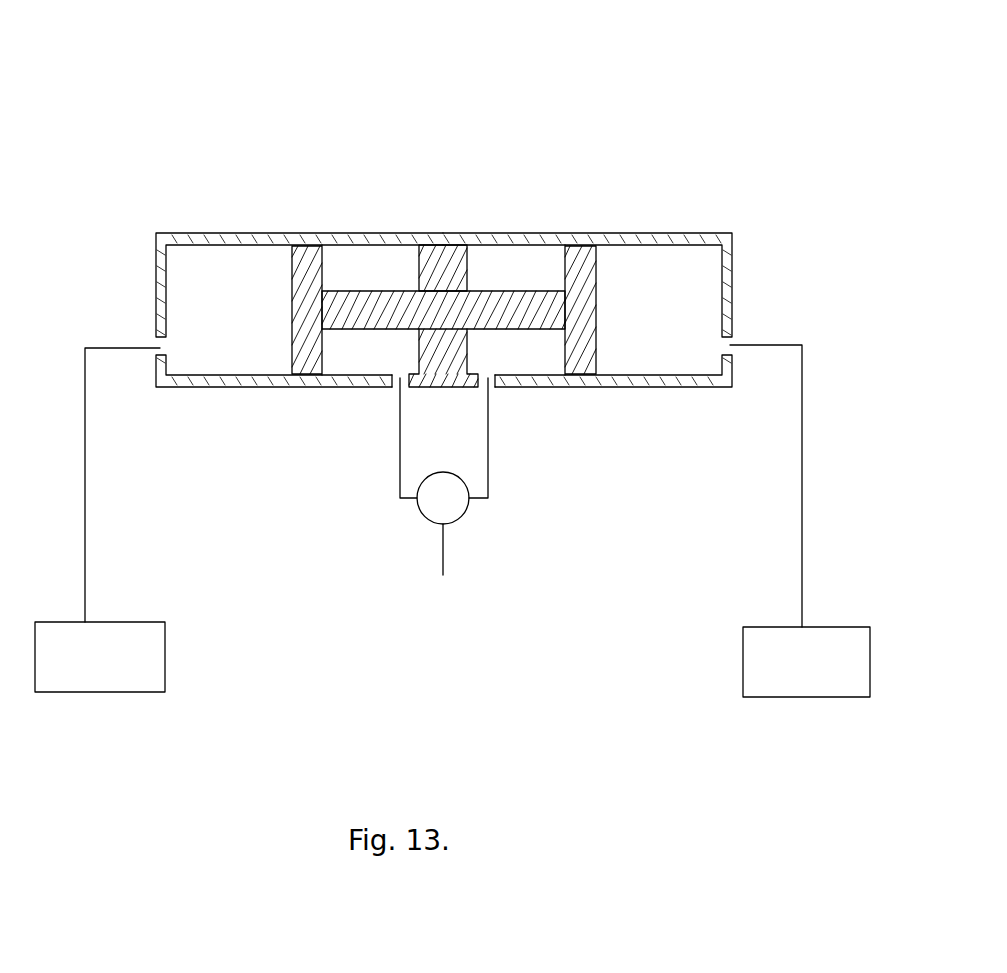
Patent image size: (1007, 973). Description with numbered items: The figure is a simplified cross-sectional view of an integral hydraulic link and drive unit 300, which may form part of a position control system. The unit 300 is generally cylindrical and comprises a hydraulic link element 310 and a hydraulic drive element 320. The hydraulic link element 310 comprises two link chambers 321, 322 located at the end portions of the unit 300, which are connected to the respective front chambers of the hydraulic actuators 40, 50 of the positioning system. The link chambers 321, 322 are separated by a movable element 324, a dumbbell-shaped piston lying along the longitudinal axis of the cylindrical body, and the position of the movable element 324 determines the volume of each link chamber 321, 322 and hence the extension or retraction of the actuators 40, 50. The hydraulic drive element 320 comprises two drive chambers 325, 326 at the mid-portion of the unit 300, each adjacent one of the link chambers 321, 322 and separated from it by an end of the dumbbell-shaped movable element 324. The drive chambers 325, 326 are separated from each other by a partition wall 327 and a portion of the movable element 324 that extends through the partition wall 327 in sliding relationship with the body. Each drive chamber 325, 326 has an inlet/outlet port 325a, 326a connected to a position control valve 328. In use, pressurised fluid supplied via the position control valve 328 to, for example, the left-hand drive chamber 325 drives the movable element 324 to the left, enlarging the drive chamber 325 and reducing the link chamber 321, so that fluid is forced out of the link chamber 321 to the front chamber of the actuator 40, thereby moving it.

The integral hydraulic link and drive unit 300 is at (647, 119).
The hydraulic link element 310 is at (458, 279).
The hydraulic drive element 320 is at (458, 279).
The link chamber 321 is at (228, 272).
The link chamber 322 is at (660, 268).
The movable element 324 is at (307, 318).
The drive chamber 325 is at (345, 268).
The inlet/outlet port 325a is at (388, 392).
The drive chamber 326 is at (517, 268).
The inlet/outlet port 326a is at (498, 395).
The partition wall 327 is at (446, 270).
The position control valve 328 is at (431, 510).
The hydraulic actuator 40 is at (105, 678).
The hydraulic actuator 50 is at (815, 676).